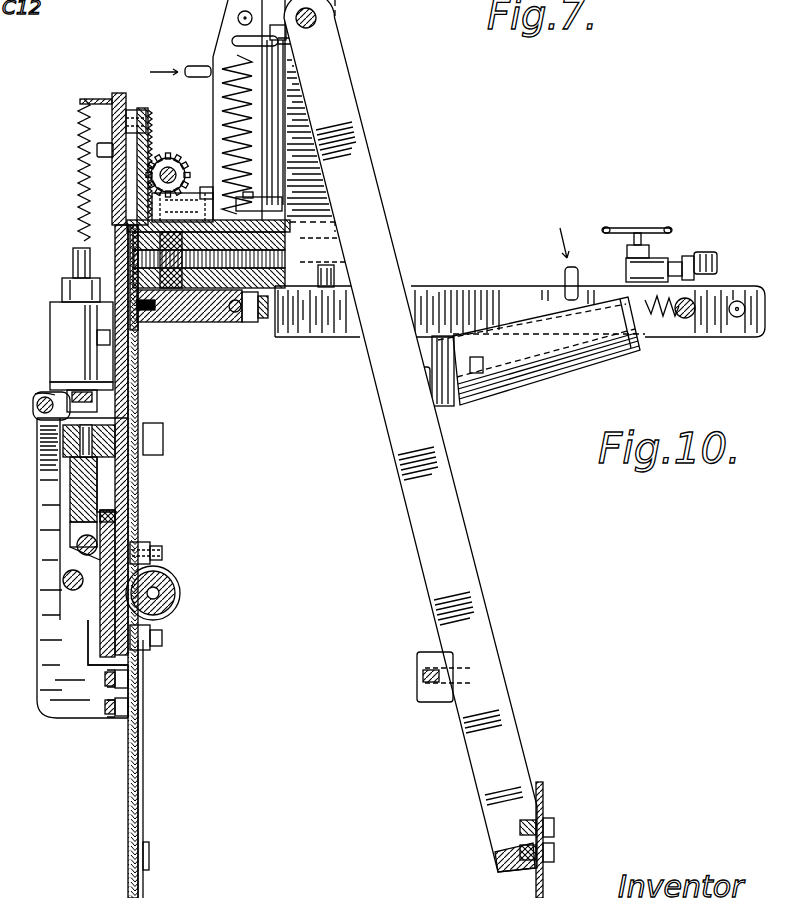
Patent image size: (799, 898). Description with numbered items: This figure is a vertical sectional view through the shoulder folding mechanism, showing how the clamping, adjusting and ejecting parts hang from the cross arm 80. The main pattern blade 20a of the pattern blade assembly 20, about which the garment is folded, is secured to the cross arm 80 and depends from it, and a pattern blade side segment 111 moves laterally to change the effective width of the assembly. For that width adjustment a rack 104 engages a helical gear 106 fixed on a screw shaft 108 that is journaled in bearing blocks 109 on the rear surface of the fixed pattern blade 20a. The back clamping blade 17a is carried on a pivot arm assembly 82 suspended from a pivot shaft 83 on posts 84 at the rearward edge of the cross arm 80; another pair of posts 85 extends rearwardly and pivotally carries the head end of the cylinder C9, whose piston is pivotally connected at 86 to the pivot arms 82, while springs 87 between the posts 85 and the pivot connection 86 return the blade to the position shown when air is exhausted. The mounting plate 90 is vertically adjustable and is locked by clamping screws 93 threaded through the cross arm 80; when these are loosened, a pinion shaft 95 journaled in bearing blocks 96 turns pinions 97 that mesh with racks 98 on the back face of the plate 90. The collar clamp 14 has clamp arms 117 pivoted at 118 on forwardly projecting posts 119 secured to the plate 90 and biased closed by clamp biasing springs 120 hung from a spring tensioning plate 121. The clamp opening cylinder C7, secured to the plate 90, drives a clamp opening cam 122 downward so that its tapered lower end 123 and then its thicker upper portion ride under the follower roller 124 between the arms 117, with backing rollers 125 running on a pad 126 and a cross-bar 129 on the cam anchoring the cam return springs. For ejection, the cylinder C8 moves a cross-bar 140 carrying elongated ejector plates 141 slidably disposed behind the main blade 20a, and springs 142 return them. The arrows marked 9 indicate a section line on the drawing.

The collar clamp 14 is at (57, 730).
The back clamping blade 17a is at (536, 890).
The pattern blade assembly 20 is at (153, 809).
The main pattern blade 20a is at (130, 820).
The cross arm 80 is at (178, 322).
The pivot arm assembly 82 is at (472, 580).
The pivot shaft 83 is at (317, 18).
The posts 84 is at (316, 190).
The posts 85 is at (504, 292).
The pivot connection 86 is at (390, 386).
The springs 87 is at (640, 342).
The mounting plate 90 is at (113, 180).
The clamping screws 93 is at (395, 248).
The pinion shaft 95 is at (168, 168).
The bearing blocks 96 is at (163, 212).
The pinions 97 is at (188, 155).
The racks 98 is at (130, 132).
The rack 104 is at (102, 603).
The helical gear 106 is at (178, 618).
The screw shaft 108 is at (172, 586).
The bearing blocks 109 is at (172, 562).
The pattern blade side segment 111 is at (148, 880).
The clamp arms 117 is at (48, 705).
The pivot axis 118 is at (35, 405).
The posts 119 is at (44, 394).
The clamp biasing springs 120 is at (80, 158).
The spring tensioning plate 121 is at (145, 69).
The clamp opening cam 122 is at (75, 470).
The tapered lower end 123 is at (65, 577).
The clamp follower roller 124 is at (100, 604).
The backing rollers 125 is at (80, 540).
The pad 126 is at (105, 633).
The cross-bar 129 is at (165, 436).
The cross-bar 140 is at (215, 315).
The ejector plates 141 is at (146, 745).
The springs 142 is at (222, 93).
The section line 9 is at (17, 522).
The clamp opening cylinder C7 is at (55, 325).
The ejector cylinder C8 is at (220, 116).
The back clamp cylinder C9 is at (560, 370).